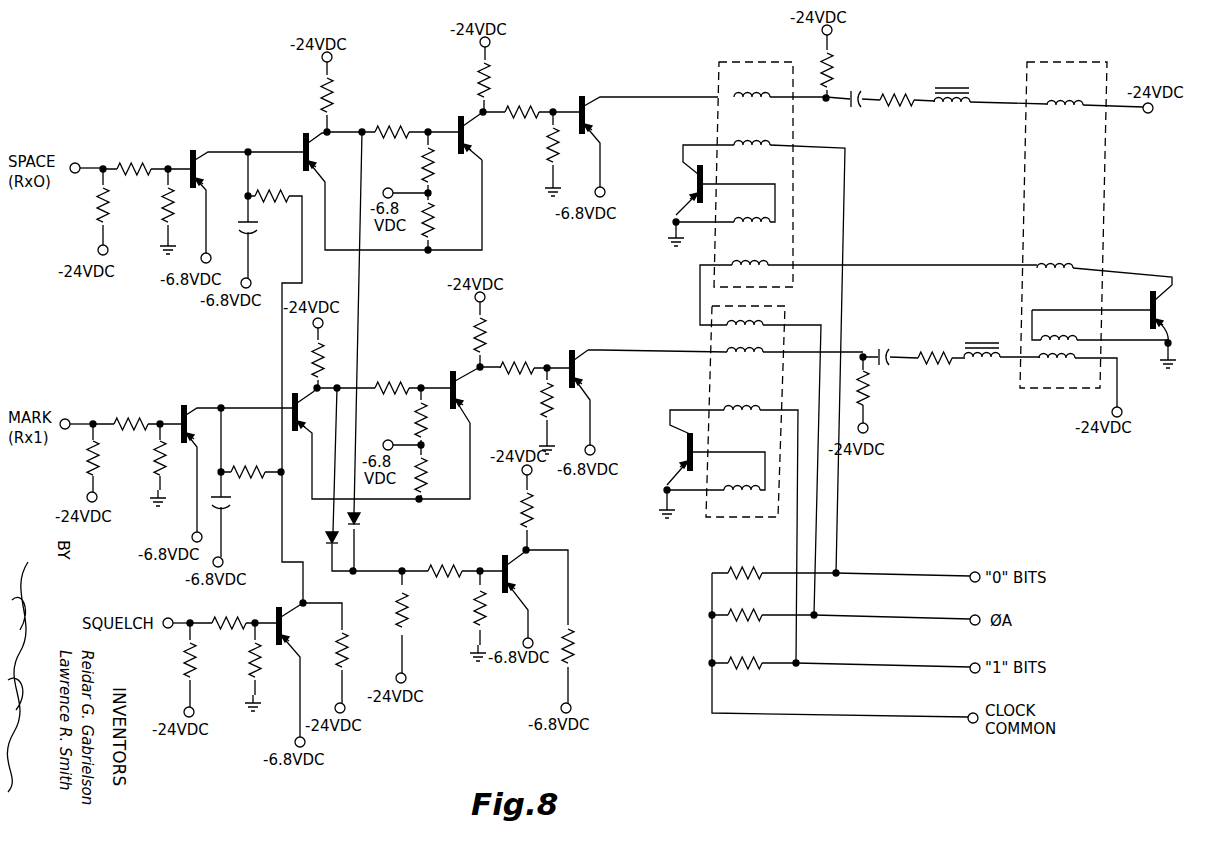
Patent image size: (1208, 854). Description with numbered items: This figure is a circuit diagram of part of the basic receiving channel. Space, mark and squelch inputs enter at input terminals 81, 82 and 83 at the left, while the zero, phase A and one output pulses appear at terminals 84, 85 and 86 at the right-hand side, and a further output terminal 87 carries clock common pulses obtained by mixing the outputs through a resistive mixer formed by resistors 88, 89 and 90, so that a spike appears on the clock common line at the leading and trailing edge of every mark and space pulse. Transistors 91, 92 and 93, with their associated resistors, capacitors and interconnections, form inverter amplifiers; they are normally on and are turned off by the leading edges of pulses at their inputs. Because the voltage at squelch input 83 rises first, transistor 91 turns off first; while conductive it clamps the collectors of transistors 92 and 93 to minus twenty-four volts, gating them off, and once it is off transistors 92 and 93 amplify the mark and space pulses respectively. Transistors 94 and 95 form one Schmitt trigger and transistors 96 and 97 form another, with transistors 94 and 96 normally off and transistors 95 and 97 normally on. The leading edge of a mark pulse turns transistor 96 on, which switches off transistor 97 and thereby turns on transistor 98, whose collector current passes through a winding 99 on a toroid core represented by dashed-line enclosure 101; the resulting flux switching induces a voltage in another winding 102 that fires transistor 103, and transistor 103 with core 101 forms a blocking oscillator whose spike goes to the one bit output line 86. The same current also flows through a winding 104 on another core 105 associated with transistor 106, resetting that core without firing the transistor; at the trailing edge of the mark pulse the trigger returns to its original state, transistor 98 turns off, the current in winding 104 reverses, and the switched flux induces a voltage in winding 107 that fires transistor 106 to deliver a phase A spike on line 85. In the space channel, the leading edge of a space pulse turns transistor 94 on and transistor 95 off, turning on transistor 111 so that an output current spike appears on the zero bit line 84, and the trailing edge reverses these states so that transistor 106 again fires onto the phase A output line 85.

The space input terminal 81 is at (80, 164).
The mark input terminal 82 is at (69, 419).
The squelch input terminal 83 is at (172, 618).
The zero output terminal 84 is at (972, 574).
The phase A output terminal 85 is at (971, 617).
The one output terminal 86 is at (971, 665).
The clock common output terminal 87 is at (969, 715).
The resistor 88 is at (745, 573).
The resistor 89 is at (745, 615).
The resistor 90 is at (745, 663).
The transistor 91 is at (277, 615).
The transistor 92 is at (181, 414).
The transistor 93 is at (189, 160).
The transistor 94 is at (302, 143).
The transistor 95 is at (457, 127).
The transistor 96 is at (293, 402).
The transistor 97 is at (450, 380).
The transistor 98 is at (580, 372).
The winding 99 is at (745, 358).
The toroid core 101 is at (746, 518).
The winding 102 is at (738, 485).
The transistor 103 is at (687, 449).
The winding 104 is at (1062, 365).
The core 105 is at (1080, 390).
The transistor 106 is at (1150, 302).
The winding 107 is at (697, 183).
The transistor 111 is at (578, 107).